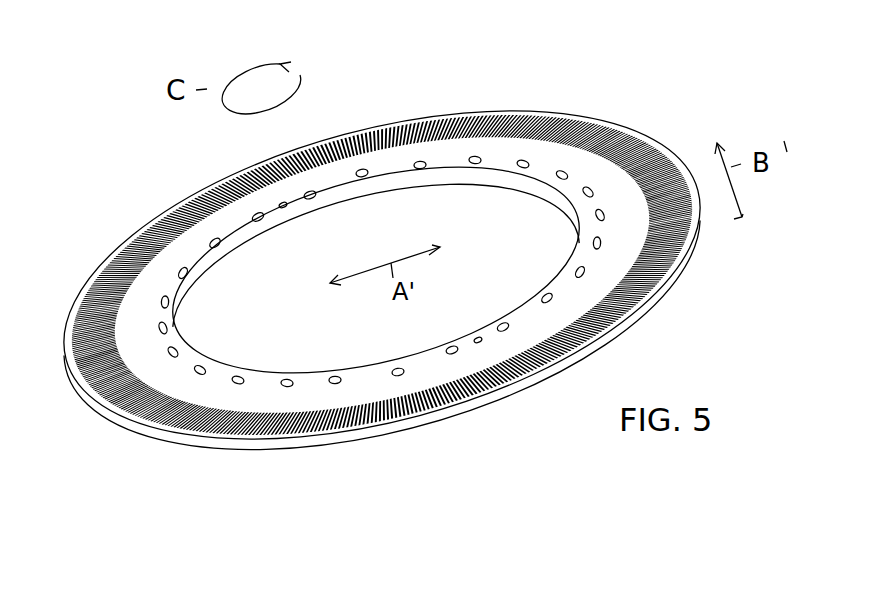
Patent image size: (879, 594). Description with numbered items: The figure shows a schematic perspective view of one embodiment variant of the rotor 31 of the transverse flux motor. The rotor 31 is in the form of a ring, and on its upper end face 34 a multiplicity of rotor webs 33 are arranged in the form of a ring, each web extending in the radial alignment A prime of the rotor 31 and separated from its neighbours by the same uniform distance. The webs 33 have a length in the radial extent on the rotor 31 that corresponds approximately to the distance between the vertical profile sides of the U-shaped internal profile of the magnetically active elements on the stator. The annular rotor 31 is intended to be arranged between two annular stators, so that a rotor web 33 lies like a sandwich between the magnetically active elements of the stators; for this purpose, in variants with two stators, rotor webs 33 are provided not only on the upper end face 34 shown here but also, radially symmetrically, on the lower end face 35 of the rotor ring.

The rotor 31 is at (657, 113).
The rotor webs 33 is at (400, 120).
The end face 34 is at (449, 152).
The lower end face 35 is at (372, 445).